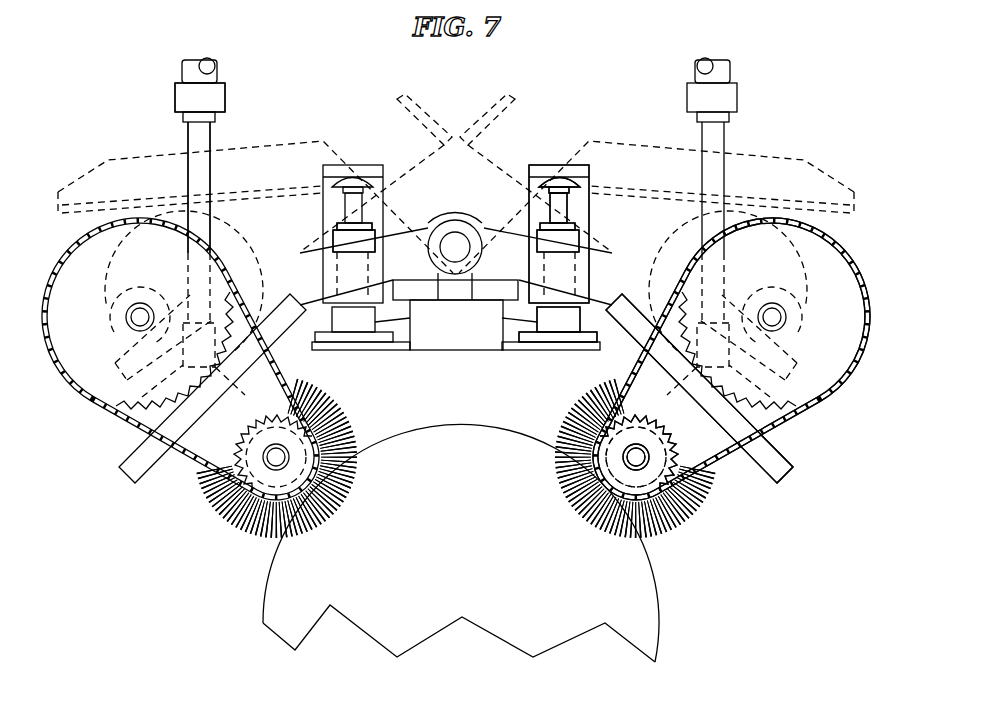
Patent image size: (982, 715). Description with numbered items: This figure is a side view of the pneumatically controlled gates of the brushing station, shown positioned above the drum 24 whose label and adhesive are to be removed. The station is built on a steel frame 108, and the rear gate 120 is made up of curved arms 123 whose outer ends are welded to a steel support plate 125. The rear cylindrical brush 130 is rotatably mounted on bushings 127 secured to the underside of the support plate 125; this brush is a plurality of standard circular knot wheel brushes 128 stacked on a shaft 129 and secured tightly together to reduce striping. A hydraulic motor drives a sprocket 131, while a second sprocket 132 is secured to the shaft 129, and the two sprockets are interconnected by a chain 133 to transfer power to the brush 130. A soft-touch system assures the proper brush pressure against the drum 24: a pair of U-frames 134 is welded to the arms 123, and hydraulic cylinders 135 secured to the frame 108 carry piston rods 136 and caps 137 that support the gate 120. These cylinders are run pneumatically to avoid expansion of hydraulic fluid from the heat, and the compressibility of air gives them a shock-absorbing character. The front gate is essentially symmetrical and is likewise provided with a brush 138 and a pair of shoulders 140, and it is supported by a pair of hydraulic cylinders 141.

The drum 24 is at (453, 457).
The steel frame 108 is at (510, 353).
The rear gate 120 is at (743, 421).
The curved arms 123 is at (788, 450).
The steel support plate 125 is at (776, 480).
The bushings 127 is at (650, 468).
The circular knot wheel brushes 128 is at (642, 540).
The shaft 129 is at (636, 458).
The rear cylindrical brush 130 is at (612, 496).
The sprocket 131 is at (833, 295).
The sprocket 132 is at (603, 425).
The chain 133 is at (733, 462).
The U-frames 134 is at (598, 222).
The hydraulic cylinders 135 is at (592, 237).
The piston rods 136 is at (552, 207).
The caps 137 is at (557, 212).
The brush 138 is at (227, 523).
The shoulders 140 is at (340, 250).
The hydraulic cylinders 141 is at (318, 228).